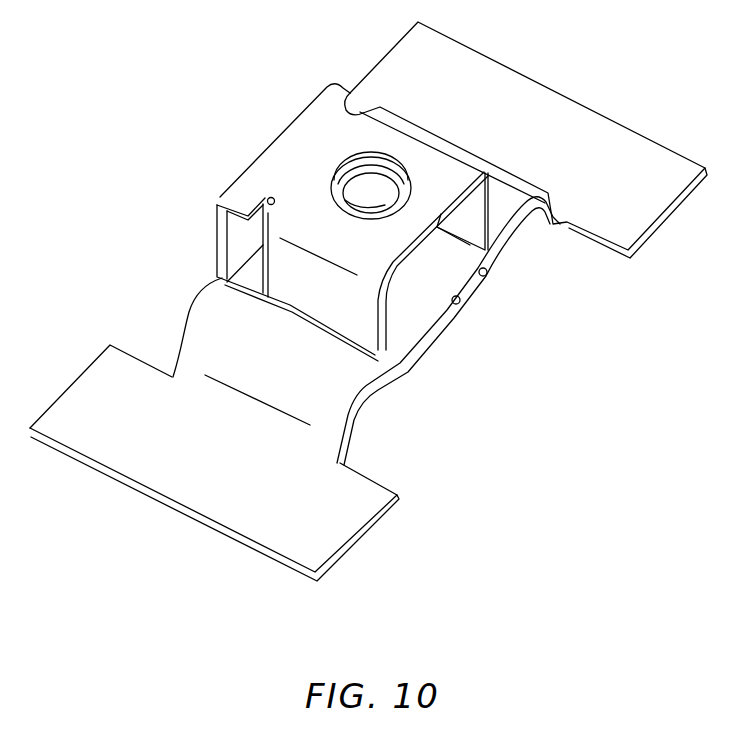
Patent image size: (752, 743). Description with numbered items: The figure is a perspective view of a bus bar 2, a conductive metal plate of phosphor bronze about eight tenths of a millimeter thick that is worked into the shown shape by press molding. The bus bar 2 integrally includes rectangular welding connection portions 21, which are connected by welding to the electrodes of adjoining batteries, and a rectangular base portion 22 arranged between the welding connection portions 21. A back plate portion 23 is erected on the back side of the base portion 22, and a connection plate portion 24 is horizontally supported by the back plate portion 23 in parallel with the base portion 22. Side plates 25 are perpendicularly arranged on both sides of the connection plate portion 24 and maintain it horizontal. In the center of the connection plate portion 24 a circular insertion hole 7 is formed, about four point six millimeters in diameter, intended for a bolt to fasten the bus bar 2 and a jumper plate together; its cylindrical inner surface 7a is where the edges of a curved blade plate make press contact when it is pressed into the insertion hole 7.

The bus bar 2 is at (368, 301).
The insertion hole 7 is at (342, 246).
The cylindrical inner surface 7a is at (384, 176).
The welding connection portions 21 is at (640, 188).
The base portion 22 is at (423, 300).
The back plate portion 23 is at (218, 223).
The connection plate portion 24 is at (337, 246).
The side plates 25 is at (290, 281).